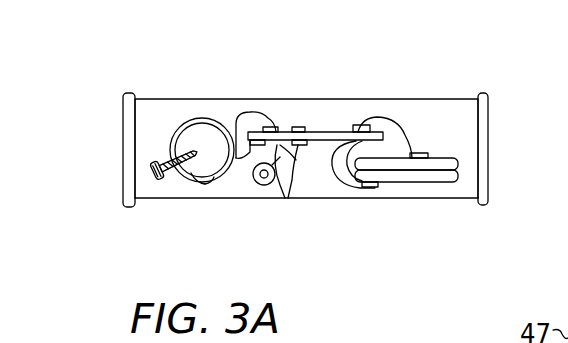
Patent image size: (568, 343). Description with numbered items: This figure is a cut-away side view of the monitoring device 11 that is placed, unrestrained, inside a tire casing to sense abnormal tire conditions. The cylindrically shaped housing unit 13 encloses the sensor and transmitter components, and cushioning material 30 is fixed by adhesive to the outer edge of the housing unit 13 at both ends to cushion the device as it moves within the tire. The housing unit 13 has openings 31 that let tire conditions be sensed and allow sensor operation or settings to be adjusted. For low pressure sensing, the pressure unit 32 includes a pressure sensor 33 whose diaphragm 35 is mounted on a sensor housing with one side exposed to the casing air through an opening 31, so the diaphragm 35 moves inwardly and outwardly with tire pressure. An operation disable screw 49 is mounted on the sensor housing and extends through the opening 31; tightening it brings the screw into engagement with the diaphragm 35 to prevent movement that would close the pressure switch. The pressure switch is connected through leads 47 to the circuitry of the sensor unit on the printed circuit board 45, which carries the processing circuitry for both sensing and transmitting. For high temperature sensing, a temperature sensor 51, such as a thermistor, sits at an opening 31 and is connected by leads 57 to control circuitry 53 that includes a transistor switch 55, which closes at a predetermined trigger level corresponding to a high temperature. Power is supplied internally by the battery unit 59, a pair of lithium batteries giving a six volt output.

The monitoring device 11 is at (153, 103).
The housing unit 13 is at (126, 192).
The cushioning material 30 is at (123, 117).
The pressure unit 32 is at (170, 150).
The pressure sensor 33 is at (188, 106).
The operation disable screw 49 is at (155, 163).
The openings 31 is at (193, 182).
The diaphragm 35 is at (210, 181).
The leads 47 is at (227, 120).
The transistor switch 55 is at (282, 126).
The control circuitry 53 is at (307, 127).
The temperature sensor 51 is at (266, 186).
The leads 57 is at (279, 181).
The printed circuit board 45 is at (336, 131).
The battery unit 59 is at (426, 176).